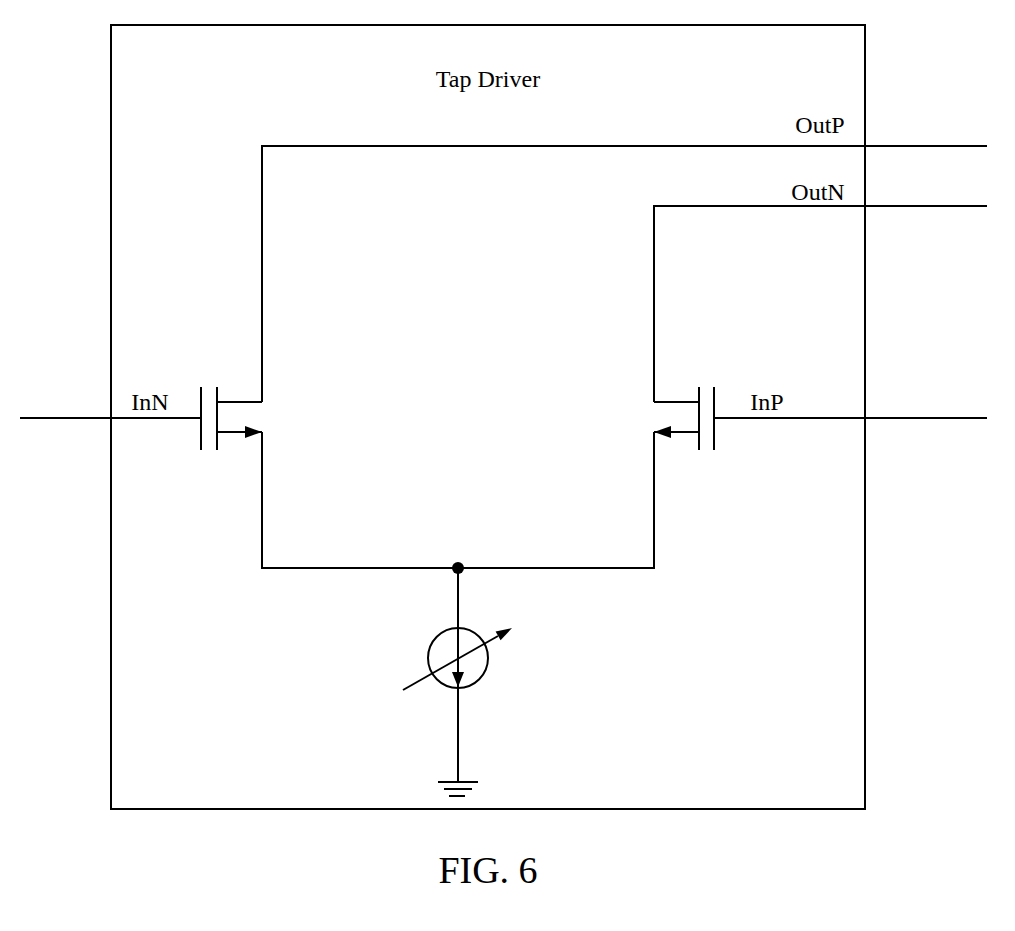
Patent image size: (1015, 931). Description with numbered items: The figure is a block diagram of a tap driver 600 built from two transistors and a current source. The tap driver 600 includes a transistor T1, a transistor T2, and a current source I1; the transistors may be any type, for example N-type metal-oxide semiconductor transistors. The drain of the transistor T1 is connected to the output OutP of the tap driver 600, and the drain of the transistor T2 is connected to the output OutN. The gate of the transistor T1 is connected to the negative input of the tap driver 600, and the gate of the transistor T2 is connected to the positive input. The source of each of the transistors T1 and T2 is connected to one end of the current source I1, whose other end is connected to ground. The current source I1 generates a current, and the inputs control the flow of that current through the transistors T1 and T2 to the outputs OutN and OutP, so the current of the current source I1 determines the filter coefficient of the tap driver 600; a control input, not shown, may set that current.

The tap driver 600 is at (505, 60).
The transistor T1 is at (228, 435).
The transistor T2 is at (687, 435).
The current source I1 is at (441, 675).
The output OutP is at (624, 274).
The output OutN is at (820, 304).